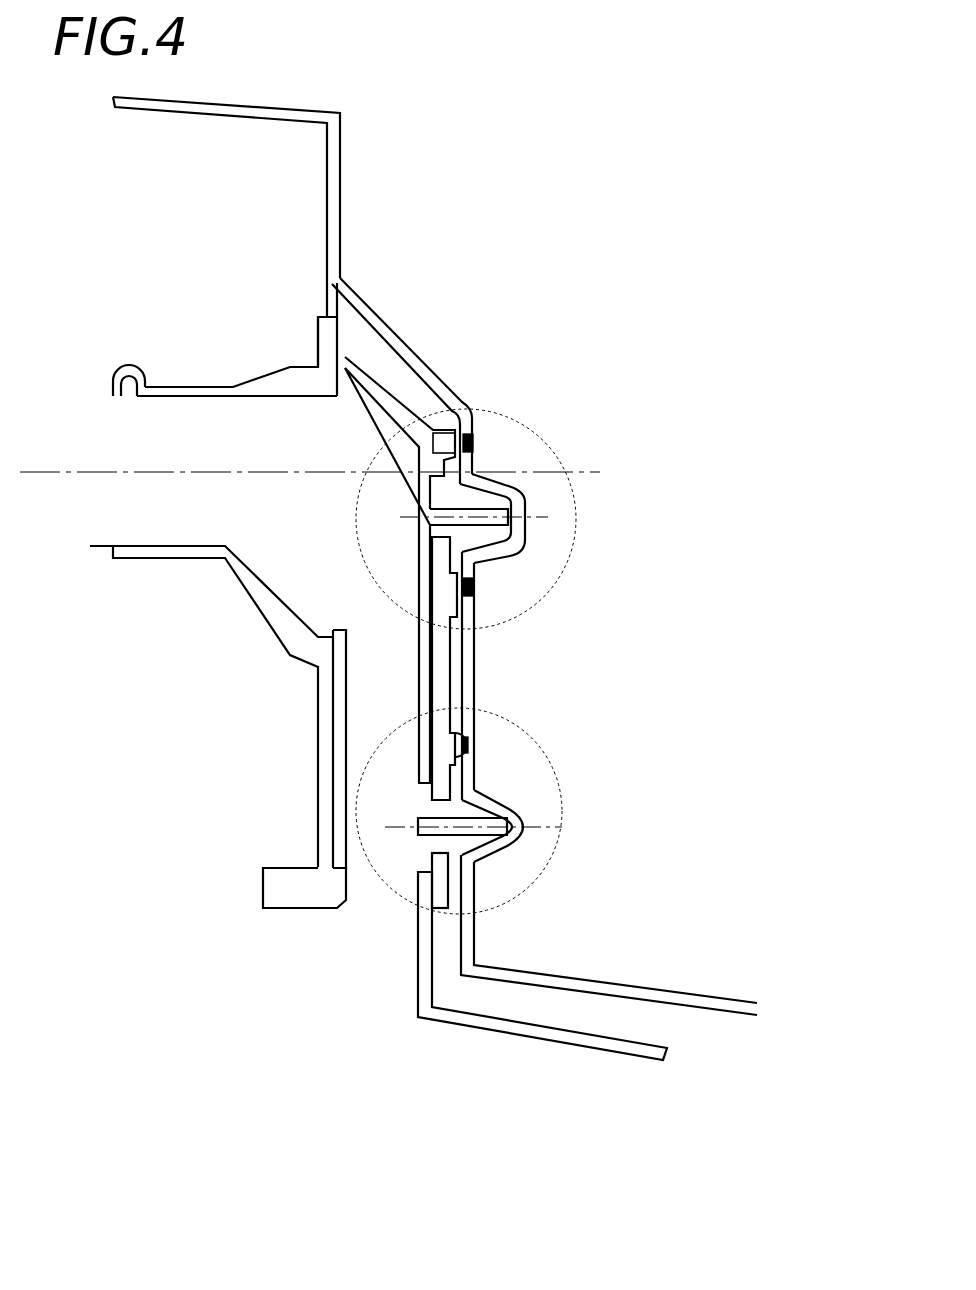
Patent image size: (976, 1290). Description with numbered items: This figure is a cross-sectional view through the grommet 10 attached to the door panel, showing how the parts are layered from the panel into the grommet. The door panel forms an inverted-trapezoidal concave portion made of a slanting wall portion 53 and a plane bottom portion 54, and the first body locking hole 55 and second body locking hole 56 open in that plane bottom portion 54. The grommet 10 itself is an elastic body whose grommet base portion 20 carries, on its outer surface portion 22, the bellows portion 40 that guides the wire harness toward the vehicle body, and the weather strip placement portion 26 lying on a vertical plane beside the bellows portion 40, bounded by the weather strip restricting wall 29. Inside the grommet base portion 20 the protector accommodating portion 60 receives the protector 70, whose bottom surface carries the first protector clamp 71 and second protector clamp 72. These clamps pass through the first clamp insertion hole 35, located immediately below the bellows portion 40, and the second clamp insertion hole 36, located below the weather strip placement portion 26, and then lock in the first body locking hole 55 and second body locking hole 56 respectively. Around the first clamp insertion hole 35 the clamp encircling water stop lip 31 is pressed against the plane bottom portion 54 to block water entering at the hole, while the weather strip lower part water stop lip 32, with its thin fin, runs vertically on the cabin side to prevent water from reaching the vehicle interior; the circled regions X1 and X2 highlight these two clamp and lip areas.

The grommet 10 is at (117, 265).
The grommet base portion 20 is at (317, 327).
The outer surface portion 22 is at (316, 362).
The weather strip placement portion 26 is at (317, 788).
The weather strip restricting wall 29 is at (263, 890).
The clamp encircling water stop lip 31 is at (470, 440).
The weather strip lower part water stop lip 32 is at (465, 745).
The first clamp insertion hole 35 is at (420, 492).
The second clamp insertion hole 36 is at (433, 840).
The bellows portion 40 is at (118, 368).
The slanting wall portion 53 is at (403, 337).
The plane bottom portion 54 is at (468, 658).
The first body locking hole 55 is at (480, 477).
The second body locking hole 56 is at (474, 916).
The protector accommodating portion 60 is at (425, 872).
The protector 70 is at (418, 1012).
The first protector clamp 71 is at (528, 528).
The second protector clamp 72 is at (523, 822).
The first detail region X1 is at (548, 439).
The second detail region X2 is at (533, 737).